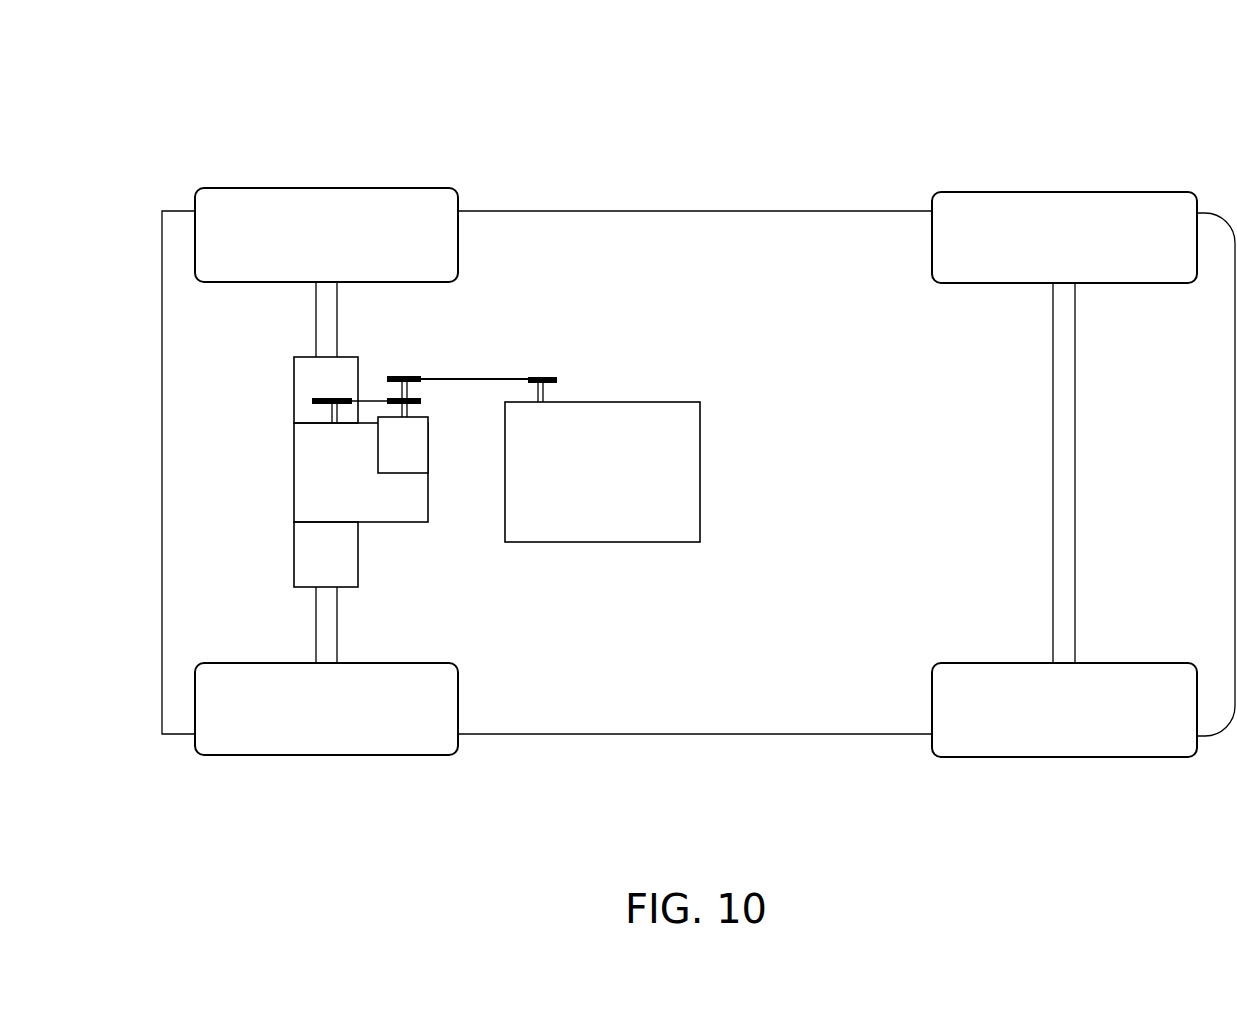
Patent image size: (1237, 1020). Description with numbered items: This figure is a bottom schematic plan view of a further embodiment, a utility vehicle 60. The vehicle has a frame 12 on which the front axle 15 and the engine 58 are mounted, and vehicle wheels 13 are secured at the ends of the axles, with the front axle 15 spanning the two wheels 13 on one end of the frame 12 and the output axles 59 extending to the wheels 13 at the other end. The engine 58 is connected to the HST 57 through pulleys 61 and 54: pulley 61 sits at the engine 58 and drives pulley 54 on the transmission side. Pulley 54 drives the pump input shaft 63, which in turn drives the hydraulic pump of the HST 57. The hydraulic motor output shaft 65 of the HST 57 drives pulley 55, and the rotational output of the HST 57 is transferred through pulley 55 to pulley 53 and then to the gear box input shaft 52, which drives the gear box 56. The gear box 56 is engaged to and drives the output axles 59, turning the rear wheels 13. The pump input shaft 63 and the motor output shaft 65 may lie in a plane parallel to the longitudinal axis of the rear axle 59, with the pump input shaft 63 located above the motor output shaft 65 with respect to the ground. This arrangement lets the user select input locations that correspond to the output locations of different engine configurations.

The utility vehicle 60 is at (822, 147).
The frame 12 is at (696, 211).
The vehicle wheels 13 is at (346, 255).
The front axle 15 is at (1076, 475).
The output axles 59 is at (316, 318).
The gear box 56 is at (358, 488).
The HST 57 is at (408, 445).
The engine 58 is at (627, 488).
The pulley 53 is at (318, 396).
The gear box input shaft 52 is at (330, 416).
The pump input shaft 63 is at (393, 394).
The pulley 55 is at (419, 396).
The pulley 54 is at (397, 376).
The hydraulic motor output shaft 65 is at (406, 410).
The pulley 61 is at (548, 376).